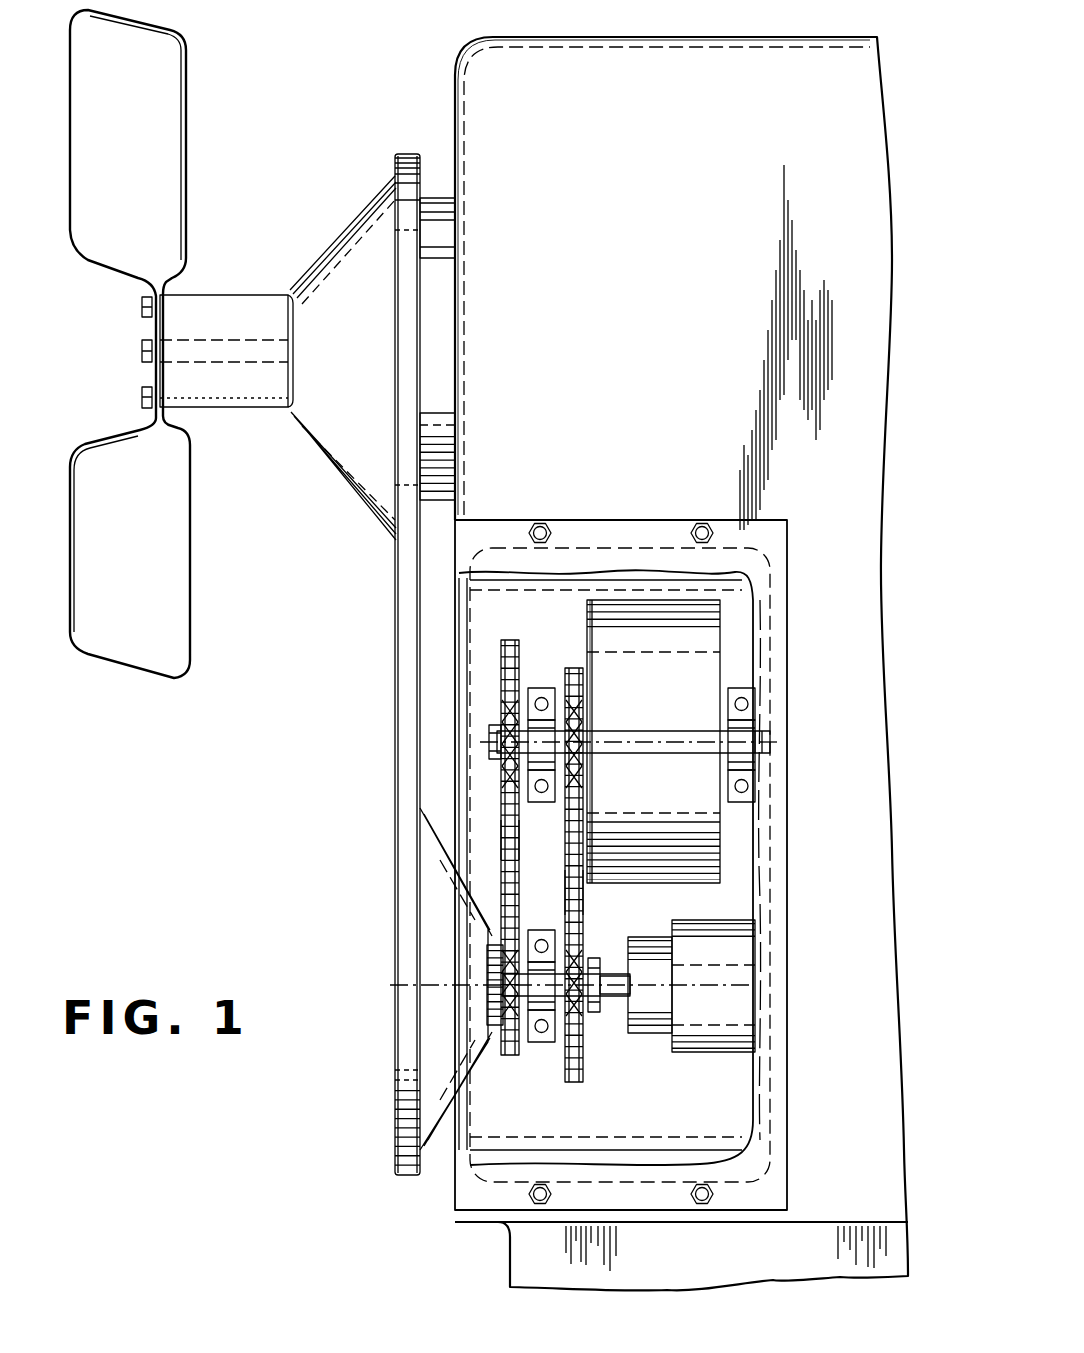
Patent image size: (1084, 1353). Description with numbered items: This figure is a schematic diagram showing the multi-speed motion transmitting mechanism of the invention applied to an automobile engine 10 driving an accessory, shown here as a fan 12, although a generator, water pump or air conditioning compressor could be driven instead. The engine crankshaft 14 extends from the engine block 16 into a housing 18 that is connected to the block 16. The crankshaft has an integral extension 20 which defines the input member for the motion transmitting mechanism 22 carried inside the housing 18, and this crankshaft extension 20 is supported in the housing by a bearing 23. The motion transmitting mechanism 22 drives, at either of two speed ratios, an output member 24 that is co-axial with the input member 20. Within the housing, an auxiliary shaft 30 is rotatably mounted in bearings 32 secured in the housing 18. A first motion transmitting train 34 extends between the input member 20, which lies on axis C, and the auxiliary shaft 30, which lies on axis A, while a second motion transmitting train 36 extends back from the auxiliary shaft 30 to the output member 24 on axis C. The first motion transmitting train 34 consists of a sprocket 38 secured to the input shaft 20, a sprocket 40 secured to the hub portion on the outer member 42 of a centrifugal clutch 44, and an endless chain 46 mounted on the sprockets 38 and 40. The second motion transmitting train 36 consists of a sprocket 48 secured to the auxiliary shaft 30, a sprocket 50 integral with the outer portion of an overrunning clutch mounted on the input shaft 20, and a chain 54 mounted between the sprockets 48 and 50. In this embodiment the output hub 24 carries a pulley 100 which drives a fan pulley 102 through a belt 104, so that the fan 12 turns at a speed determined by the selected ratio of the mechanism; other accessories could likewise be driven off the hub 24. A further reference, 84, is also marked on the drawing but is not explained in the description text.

The automobile engine 10 is at (428, 70).
The fan 12 is at (172, 240).
The engine crankshaft 14 is at (652, 938).
The engine block 16 is at (628, 333).
The housing 18 is at (768, 649).
The crankshaft extension 20 is at (614, 1004).
The motion transmitting mechanism 22 is at (552, 847).
The bearing 23 is at (554, 966).
The output member 24 is at (498, 994).
The auxiliary shaft 30 is at (500, 735).
The bearings 32 is at (745, 724).
The first motion transmitting train 34 is at (591, 811).
The second motion transmitting train 36 is at (497, 795).
The sprocket 38 is at (584, 968).
The sprocket 40 is at (586, 754).
The outer member 42 is at (716, 624).
The centrifugal clutch 44 is at (619, 692).
The endless chain 46 is at (585, 894).
The sprocket 48 is at (502, 690).
The sprocket 50 is at (500, 975).
The chain 54 is at (503, 838).
The clutch housing 84 is at (590, 600).
The pulley 100 is at (450, 1082).
The fan pulley 102 is at (302, 432).
The belt 104 is at (404, 607).